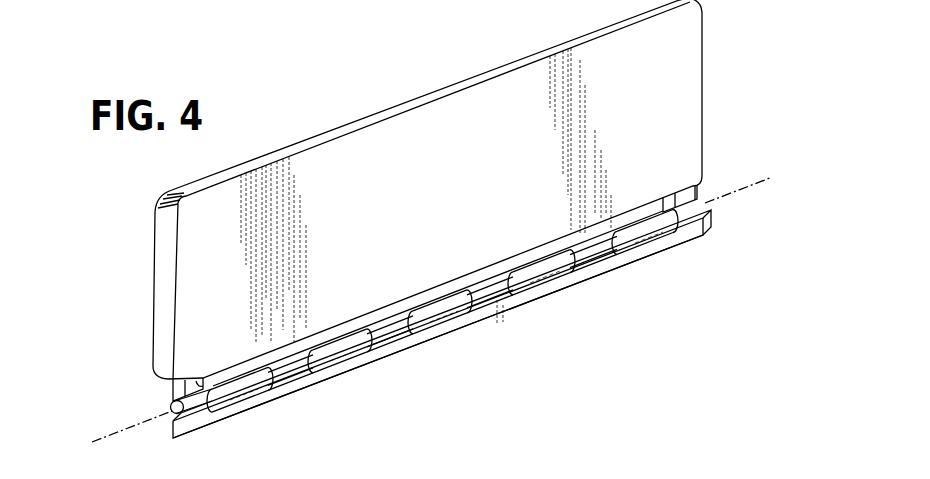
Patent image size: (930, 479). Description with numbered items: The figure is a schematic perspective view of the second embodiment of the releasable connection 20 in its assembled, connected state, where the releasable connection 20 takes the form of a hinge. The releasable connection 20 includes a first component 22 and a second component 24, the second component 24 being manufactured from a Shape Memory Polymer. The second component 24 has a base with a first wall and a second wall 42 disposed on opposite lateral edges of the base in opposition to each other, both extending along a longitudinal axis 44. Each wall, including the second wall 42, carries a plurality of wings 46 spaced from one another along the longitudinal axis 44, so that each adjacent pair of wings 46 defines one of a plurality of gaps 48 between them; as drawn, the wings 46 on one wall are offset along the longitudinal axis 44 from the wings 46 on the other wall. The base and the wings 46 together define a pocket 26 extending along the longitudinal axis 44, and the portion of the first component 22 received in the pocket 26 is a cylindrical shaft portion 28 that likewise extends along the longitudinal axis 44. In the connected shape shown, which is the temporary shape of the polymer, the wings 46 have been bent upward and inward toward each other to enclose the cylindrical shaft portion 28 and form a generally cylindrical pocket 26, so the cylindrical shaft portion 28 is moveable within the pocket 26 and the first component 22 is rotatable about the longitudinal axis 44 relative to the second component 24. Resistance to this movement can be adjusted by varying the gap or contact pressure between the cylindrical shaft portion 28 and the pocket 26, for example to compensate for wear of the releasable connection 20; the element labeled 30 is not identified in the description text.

The releasable connection 20 is at (158, 402).
The first component 22 is at (445, 91).
The second component 24 is at (487, 316).
The pocket 26 is at (198, 388).
The cylindrical shaft portion 28 is at (592, 256).
The base plate 30 is at (270, 405).
The second wall 42 is at (350, 360).
The longitudinal axis 44 is at (757, 180).
The wings 46 is at (651, 238).
The gaps 48 is at (395, 353).